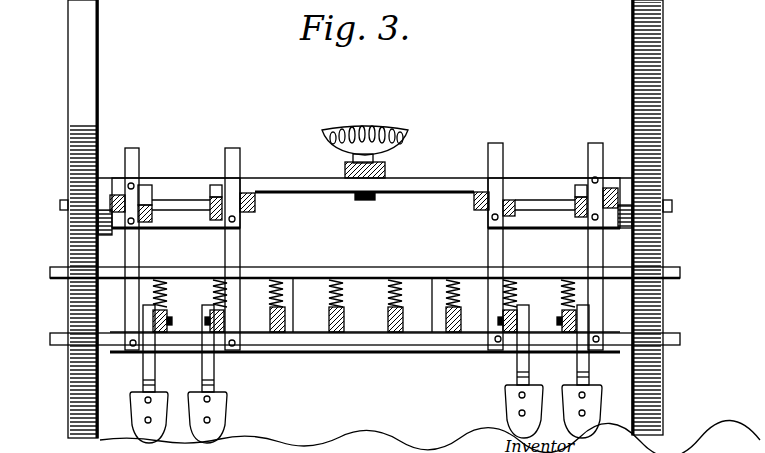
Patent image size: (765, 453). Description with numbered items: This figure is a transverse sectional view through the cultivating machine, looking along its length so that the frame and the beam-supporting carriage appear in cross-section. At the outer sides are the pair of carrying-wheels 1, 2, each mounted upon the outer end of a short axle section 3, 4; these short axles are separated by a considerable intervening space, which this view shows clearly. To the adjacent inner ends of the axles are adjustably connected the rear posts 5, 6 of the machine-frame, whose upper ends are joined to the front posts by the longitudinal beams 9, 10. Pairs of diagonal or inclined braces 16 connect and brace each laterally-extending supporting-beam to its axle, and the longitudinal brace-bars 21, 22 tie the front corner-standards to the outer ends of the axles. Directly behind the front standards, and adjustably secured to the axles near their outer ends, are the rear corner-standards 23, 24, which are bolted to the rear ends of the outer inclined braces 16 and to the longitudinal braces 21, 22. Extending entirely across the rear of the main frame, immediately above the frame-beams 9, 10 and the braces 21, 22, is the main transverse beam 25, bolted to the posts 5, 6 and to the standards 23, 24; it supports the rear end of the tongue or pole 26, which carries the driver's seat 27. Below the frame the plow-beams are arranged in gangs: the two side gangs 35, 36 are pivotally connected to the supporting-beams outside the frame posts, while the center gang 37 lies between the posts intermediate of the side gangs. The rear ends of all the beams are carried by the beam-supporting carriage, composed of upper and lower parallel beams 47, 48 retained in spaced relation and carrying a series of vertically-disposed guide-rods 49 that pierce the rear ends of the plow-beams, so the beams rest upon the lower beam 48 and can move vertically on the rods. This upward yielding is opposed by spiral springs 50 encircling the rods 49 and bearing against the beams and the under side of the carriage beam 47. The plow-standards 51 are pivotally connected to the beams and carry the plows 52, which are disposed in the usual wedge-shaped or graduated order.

The carrying-wheel 1 is at (68, 66).
The carrying-wheel 2 is at (663, 64).
The short axle section 3 is at (193, 230).
The short axle section 4 is at (545, 228).
The rear post 5 is at (233, 150).
The rear post 6 is at (497, 150).
The longitudinal beam 9 is at (255, 205).
The longitudinal beam 10 is at (474, 206).
The diagonal braces 16 is at (208, 203).
The longitudinal brace-bar 21 is at (114, 194).
The longitudinal brace-bar 22 is at (610, 188).
The rear corner-standard 23 is at (139, 160).
The rear corner-standard 24 is at (590, 248).
The main transverse beam 25 is at (410, 190).
The tongue or pole 26 is at (386, 168).
The driver's seat 27 is at (365, 125).
The side gang 35 is at (212, 322).
The side gang 36 is at (568, 330).
The center gang 37 is at (388, 320).
The upper carriage beam 47 is at (360, 268).
The lower carriage beam 48 is at (366, 354).
The guide-rods 49 is at (458, 295).
The spiral springs 50 is at (210, 293).
The plow-standards 51 is at (202, 373).
The plows 52 is at (160, 430).